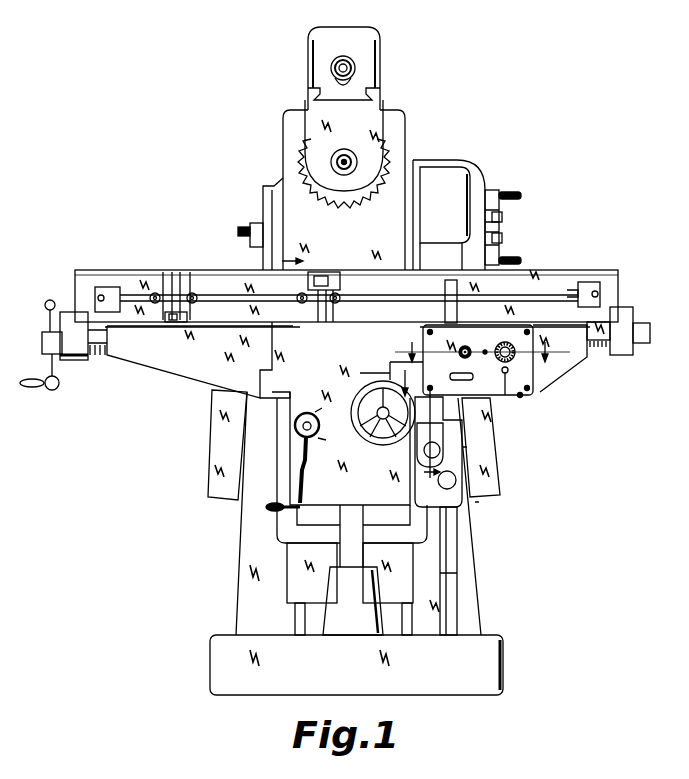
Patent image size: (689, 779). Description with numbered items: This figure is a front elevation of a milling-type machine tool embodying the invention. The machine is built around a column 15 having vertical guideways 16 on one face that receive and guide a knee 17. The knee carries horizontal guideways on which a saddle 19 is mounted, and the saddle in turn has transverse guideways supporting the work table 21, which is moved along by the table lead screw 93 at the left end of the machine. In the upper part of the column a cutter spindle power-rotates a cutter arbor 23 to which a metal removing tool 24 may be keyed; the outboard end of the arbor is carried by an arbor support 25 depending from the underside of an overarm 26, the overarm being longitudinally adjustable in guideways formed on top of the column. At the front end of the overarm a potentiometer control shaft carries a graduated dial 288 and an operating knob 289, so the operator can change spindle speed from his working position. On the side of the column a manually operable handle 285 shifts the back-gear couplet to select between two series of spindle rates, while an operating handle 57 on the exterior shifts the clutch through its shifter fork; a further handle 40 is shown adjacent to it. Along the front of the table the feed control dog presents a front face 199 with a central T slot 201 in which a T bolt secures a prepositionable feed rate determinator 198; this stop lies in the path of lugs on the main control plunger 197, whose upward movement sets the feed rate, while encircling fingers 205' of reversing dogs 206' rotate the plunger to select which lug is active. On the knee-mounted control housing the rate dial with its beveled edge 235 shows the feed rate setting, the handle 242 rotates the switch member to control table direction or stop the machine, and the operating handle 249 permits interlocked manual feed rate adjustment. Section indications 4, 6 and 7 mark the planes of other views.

The overarm 26 is at (364, 53).
The graduated dial 288 is at (331, 64).
The operating knob 289 is at (340, 70).
The arbor support 25 is at (373, 120).
The metal removing tool 24 is at (391, 148).
The cutter arbor 23 is at (331, 162).
The manually operable handle 285 is at (240, 226).
The operating handle 57 is at (512, 192).
The bolt 40 is at (508, 258).
The work table 21 is at (542, 270).
The rod 205' is at (354, 273).
The clamp block 206' is at (369, 283).
The T slot 201 is at (175, 272).
The front face 199 is at (194, 292).
The feed rate determinator 198 is at (336, 276).
The section line 4- 4 is at (366, 366).
The main control plunger 197 is at (457, 306).
The section line 6- 6 is at (491, 360).
The section line 7- 7 is at (391, 373).
The beveled edge 235 is at (507, 343).
The handle 242 is at (466, 380).
The operating handle 249 is at (522, 396).
The saddle 19 is at (152, 368).
The table lead screw 93 is at (97, 362).
The column 15 is at (236, 575).
The vertical guideways 16 is at (290, 590).
The knee 17 is at (300, 408).